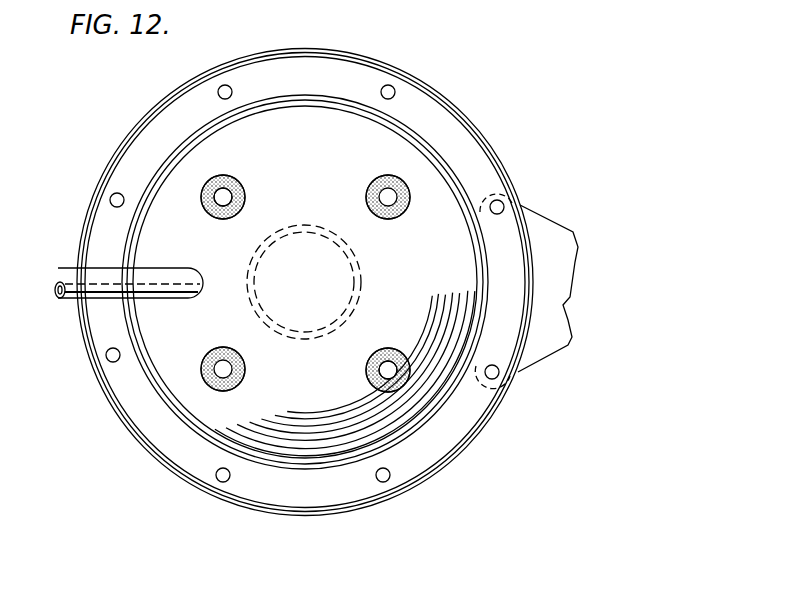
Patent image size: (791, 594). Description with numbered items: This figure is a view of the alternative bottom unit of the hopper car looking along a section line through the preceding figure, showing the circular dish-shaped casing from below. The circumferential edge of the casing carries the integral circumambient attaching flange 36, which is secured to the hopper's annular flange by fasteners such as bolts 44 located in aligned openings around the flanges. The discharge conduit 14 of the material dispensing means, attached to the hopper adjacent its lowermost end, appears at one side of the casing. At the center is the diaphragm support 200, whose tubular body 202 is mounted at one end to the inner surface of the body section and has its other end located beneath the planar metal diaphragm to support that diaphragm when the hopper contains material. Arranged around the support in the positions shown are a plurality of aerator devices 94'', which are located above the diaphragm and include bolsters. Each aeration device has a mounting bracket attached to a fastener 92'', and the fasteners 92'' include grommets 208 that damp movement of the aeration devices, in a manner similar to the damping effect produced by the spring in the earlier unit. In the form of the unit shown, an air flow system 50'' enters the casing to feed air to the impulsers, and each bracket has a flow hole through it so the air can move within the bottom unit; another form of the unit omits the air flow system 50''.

The discharge conduit 14 is at (541, 210).
The attaching flange 36 is at (452, 138).
The bolts 44 is at (393, 90).
The air flow system 50'' is at (120, 258).
The fastener 92'' is at (319, 283).
The aerator devices 94'' is at (305, 288).
The diaphragm support 200 is at (252, 295).
The tubular body 202 is at (256, 291).
The grommets 208 is at (229, 186).